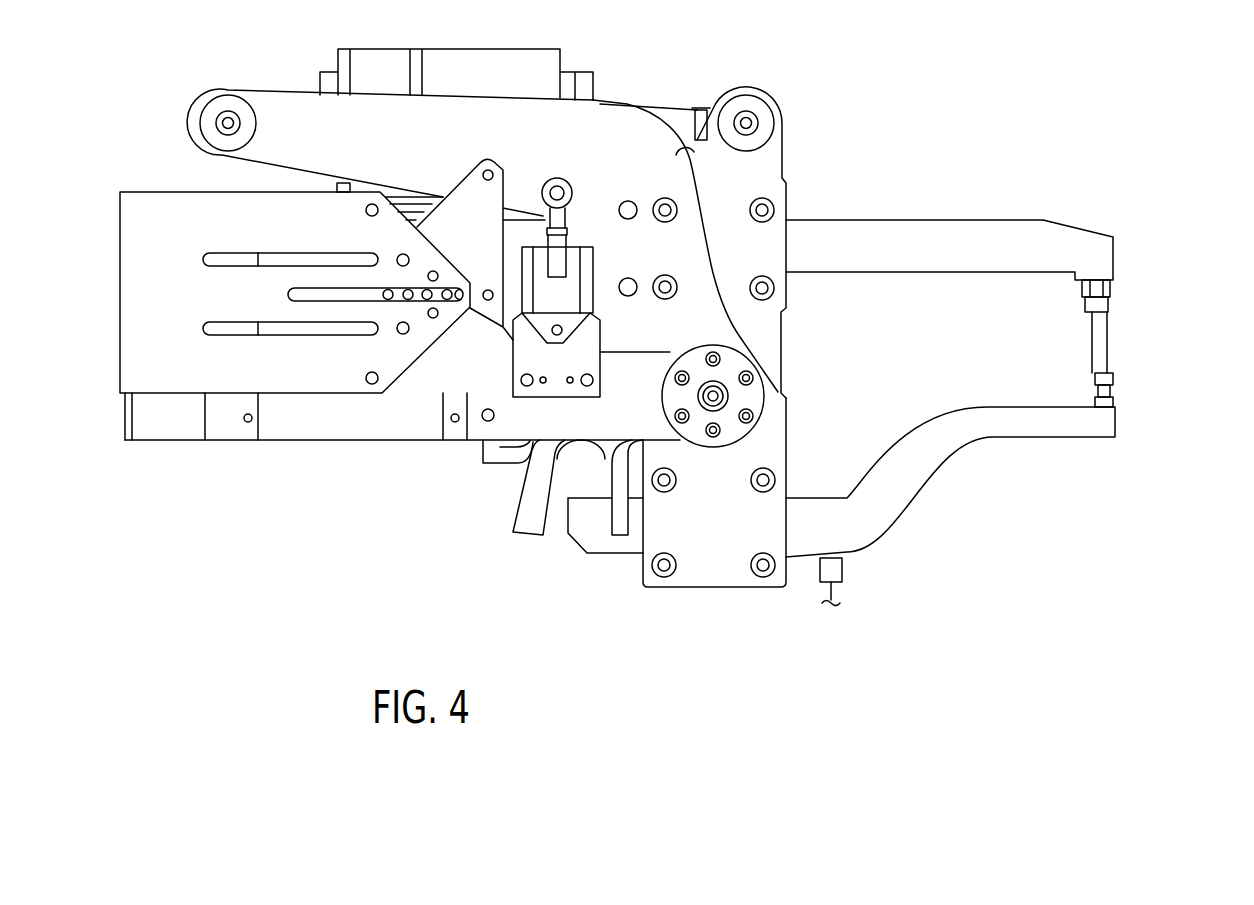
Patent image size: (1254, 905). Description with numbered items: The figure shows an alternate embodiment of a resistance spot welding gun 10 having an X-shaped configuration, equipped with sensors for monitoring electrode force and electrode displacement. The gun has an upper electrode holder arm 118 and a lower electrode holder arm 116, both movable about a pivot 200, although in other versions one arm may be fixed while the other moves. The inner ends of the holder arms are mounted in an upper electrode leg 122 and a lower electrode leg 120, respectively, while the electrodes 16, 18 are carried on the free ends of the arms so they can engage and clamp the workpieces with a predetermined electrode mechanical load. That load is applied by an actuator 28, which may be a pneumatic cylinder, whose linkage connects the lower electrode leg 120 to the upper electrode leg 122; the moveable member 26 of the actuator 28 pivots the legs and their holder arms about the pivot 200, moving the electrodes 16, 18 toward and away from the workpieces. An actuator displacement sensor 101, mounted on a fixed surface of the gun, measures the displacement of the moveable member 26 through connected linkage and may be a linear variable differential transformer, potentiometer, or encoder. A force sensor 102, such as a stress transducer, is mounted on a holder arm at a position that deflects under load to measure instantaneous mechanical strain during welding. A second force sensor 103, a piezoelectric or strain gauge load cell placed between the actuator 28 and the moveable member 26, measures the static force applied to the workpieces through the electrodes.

The welding gun 10 is at (207, 523).
The electrode 16 is at (1113, 383).
The electrode 18 is at (1113, 373).
The moveable member 26 is at (548, 242).
The actuator 28 is at (547, 293).
The actuator displacement sensor 101 is at (562, 258).
The force sensor 102 is at (822, 578).
The second force sensor 103 is at (543, 217).
The lower electrode holder arm 116 is at (980, 432).
The upper electrode holder arm 118 is at (980, 218).
The lower electrode leg 120 is at (707, 560).
The upper electrode leg 122 is at (765, 168).
The pivot 200 is at (723, 395).